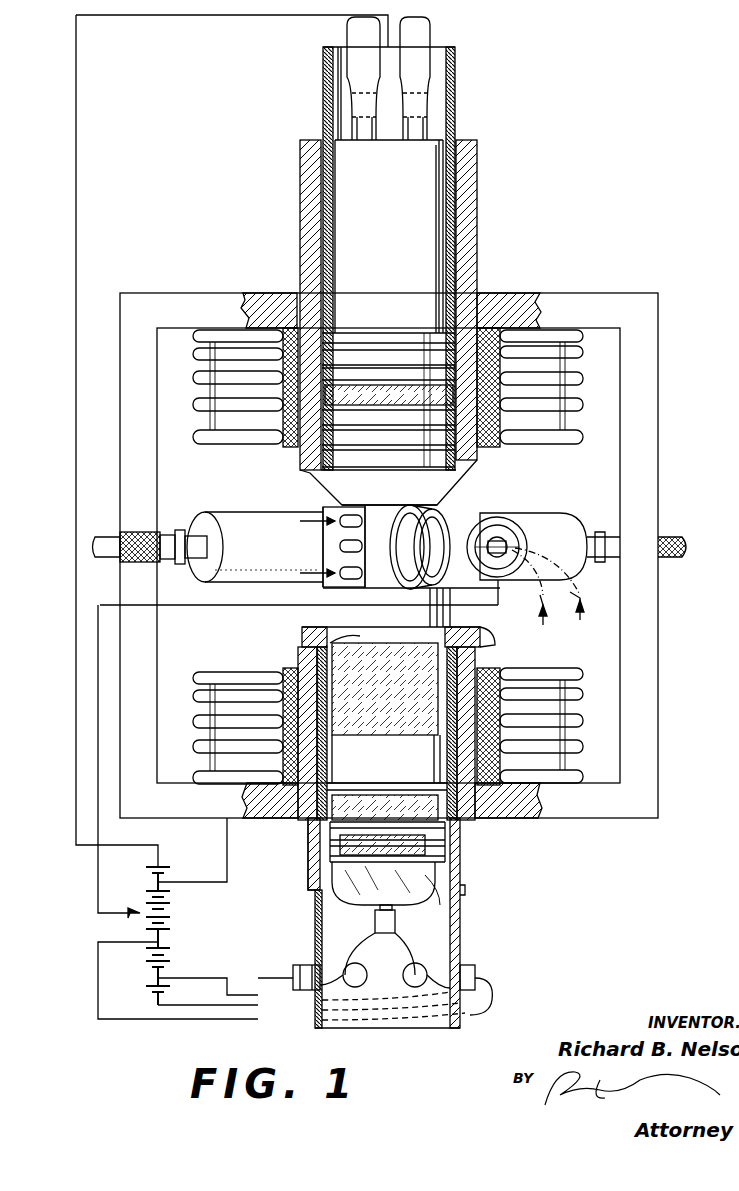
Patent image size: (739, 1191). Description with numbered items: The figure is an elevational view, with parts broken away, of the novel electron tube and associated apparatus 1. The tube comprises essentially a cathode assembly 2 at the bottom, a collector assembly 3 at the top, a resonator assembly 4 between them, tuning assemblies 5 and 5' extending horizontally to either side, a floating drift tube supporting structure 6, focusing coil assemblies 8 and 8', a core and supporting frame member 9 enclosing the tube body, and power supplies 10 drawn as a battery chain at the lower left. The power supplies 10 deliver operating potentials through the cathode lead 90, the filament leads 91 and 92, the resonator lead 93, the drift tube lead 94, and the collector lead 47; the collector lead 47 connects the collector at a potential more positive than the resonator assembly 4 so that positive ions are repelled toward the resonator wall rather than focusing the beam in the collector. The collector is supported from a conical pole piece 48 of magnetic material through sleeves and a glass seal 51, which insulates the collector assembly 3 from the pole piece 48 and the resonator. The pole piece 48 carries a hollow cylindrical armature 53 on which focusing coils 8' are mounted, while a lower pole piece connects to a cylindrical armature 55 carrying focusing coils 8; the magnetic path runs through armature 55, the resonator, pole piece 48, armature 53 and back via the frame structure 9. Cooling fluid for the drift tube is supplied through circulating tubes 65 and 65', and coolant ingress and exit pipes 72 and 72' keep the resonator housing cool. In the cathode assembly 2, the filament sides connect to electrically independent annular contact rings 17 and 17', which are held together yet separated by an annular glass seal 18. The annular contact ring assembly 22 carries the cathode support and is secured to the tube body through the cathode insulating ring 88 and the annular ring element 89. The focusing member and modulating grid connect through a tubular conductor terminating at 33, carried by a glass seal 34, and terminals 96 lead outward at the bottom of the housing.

The electron tube and associated apparatus 1 is at (500, 268).
The cathode assembly 2 is at (462, 873).
The collector assembly 3 is at (415, 202).
The resonator assembly 4 is at (295, 596).
The tuning assembly 5 is at (208, 530).
The tuning assembly 5' is at (583, 539).
The floating drift tube supporting structure 6 is at (505, 523).
The focusing coil assembly 8 is at (388, 712).
The focusing coil assembly 8' is at (399, 387).
The core and supporting frame member 9 is at (598, 293).
The power supplies 10 is at (185, 925).
The annular contact ring 17 is at (351, 882).
The annular contact ring 17' is at (351, 863).
The annular glass seal 18 is at (440, 843).
The annular contact ring assembly 22 is at (300, 820).
The terminal of tubular conductor 33 is at (375, 922).
The glass seal 34 is at (410, 893).
The collector lead 47 is at (76, 660).
The conical pole piece 48 is at (455, 480).
The glass seal 51 is at (298, 440).
The hollow cylindrical armature 53 is at (306, 290).
The cylindrical armature 55 is at (470, 650).
The circulating tube 65 is at (549, 588).
The circulating tube 65' is at (523, 587).
The water coolant ingress pipe 72 is at (324, 534).
The water coolant exit pipe 72' is at (316, 559).
The cathode insulating ring 88 is at (388, 715).
The annular ring element 89 is at (360, 640).
The cathode lead 90 is at (145, 1019).
The filament lead 91 is at (180, 978).
The filament lead 92 is at (180, 1000).
The resonator lead 93 is at (180, 882).
The drift tube lead 94 is at (98, 712).
The terminal 96 is at (278, 978).